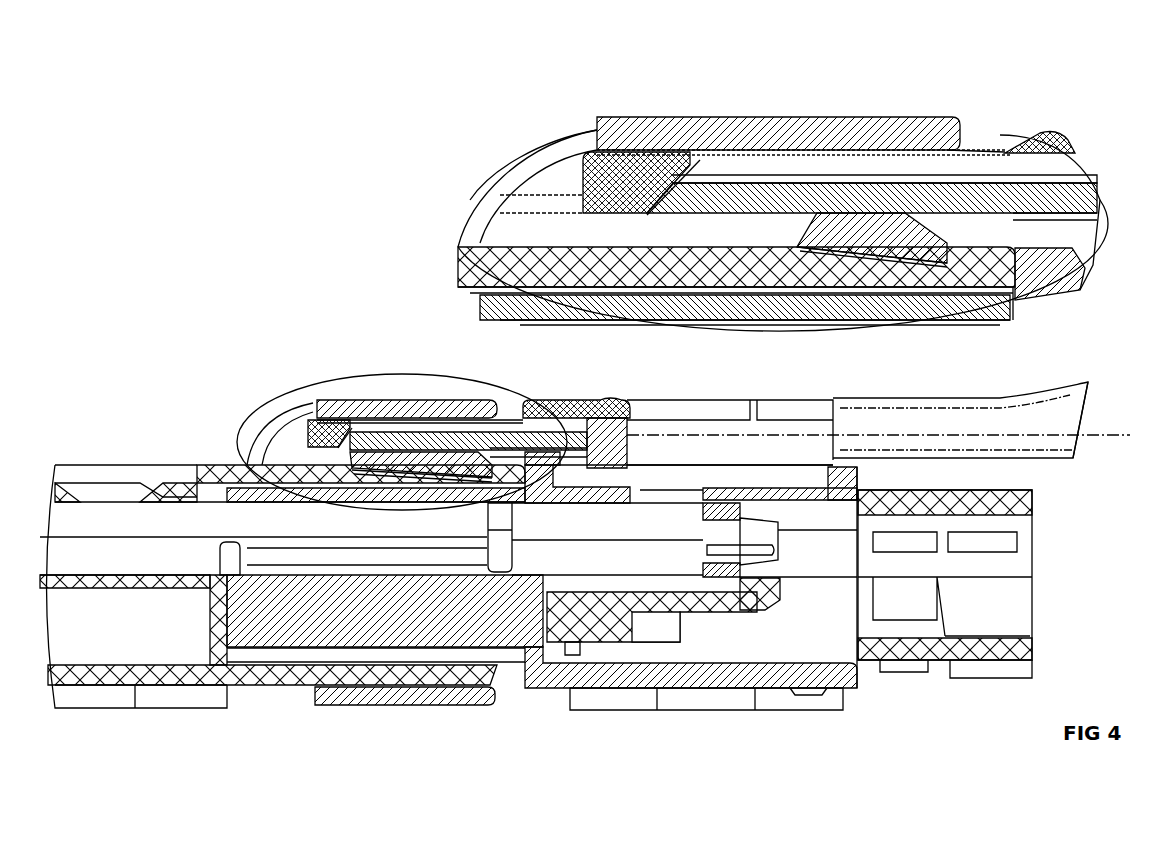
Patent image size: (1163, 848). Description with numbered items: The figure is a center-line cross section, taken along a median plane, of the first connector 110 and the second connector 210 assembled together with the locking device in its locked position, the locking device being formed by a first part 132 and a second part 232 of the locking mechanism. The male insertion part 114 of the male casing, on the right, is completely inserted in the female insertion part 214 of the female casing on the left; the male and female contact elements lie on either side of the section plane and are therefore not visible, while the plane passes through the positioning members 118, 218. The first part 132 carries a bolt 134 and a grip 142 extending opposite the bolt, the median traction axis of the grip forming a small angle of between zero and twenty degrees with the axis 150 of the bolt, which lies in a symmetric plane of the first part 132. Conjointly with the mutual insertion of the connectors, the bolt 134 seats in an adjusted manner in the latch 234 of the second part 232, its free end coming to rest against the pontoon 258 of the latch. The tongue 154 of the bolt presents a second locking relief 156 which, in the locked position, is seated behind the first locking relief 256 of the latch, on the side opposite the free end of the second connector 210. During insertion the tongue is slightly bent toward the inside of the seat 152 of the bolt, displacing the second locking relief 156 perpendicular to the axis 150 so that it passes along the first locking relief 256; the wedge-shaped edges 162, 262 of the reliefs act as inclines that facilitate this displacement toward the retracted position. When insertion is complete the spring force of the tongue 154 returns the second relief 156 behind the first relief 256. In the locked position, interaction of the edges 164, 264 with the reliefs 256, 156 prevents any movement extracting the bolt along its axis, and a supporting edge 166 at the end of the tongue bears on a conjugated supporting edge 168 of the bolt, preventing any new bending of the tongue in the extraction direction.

The first connector 110 is at (763, 593).
The male insertion part 114 is at (487, 613).
The positioning member 118 is at (580, 558).
The first part of the locking mechanism 132 is at (629, 378).
The bolt 134 is at (593, 128).
The grip 142 is at (1060, 417).
The axis of the bolt 150 is at (910, 433).
The seat of the bolt 152 is at (813, 170).
The tongue 154 is at (1037, 200).
The second locking relief 156 is at (583, 182).
The edge of the second locking relief 162 is at (673, 233).
The edge of the second locking relief 164 is at (835, 180).
The supporting edge of the tongue 166 is at (667, 178).
The conjugated supporting edge of the bolt 168 is at (597, 157).
The second connector 210 is at (118, 727).
The female insertion part 214 is at (360, 700).
The positioning member 218 is at (323, 528).
The second part of the locking mechanism 232 is at (697, 85).
The latch 234 is at (780, 125).
The first locking relief 256 is at (943, 225).
The pontoon 258 is at (753, 130).
The edge of the first locking relief 262 is at (978, 190).
The edge of the first locking relief 264 is at (852, 195).